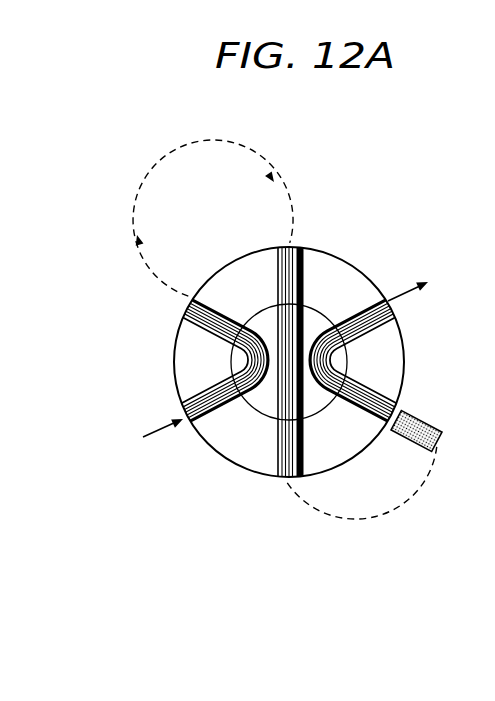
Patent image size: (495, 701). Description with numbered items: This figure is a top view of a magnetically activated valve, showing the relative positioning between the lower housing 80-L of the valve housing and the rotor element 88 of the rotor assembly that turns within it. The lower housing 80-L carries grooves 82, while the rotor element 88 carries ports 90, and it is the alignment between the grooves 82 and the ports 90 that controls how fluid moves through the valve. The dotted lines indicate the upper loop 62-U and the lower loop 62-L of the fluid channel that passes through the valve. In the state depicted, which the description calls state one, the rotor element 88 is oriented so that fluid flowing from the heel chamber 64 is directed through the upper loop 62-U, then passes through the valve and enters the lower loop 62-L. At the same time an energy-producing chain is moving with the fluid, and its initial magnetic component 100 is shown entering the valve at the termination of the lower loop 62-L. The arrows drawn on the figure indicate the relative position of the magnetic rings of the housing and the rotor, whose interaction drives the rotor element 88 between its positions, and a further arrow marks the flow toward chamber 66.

The upper loop 62-U is at (232, 166).
The lower loop 62-L is at (348, 547).
The lower housing 80-L is at (320, 262).
The grooves 82 is at (282, 278).
The rotor element 88 is at (263, 400).
The ports 90 is at (325, 360).
The initial magnetic component 100 is at (420, 442).
The heel chamber 64 is at (117, 442).
The chamber 66 is at (439, 266).